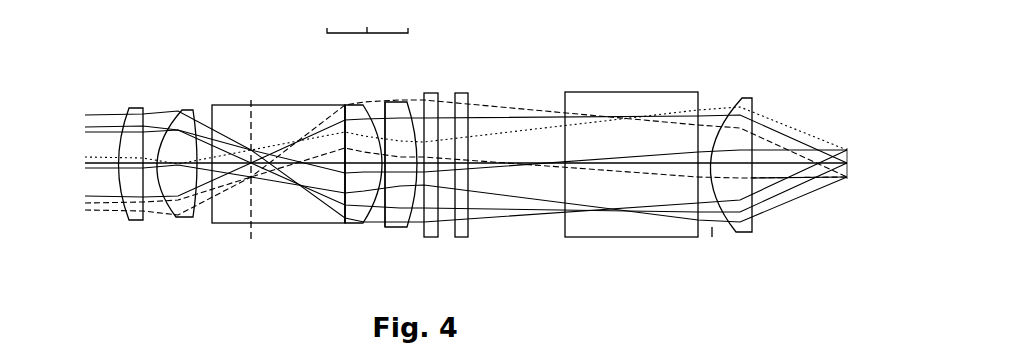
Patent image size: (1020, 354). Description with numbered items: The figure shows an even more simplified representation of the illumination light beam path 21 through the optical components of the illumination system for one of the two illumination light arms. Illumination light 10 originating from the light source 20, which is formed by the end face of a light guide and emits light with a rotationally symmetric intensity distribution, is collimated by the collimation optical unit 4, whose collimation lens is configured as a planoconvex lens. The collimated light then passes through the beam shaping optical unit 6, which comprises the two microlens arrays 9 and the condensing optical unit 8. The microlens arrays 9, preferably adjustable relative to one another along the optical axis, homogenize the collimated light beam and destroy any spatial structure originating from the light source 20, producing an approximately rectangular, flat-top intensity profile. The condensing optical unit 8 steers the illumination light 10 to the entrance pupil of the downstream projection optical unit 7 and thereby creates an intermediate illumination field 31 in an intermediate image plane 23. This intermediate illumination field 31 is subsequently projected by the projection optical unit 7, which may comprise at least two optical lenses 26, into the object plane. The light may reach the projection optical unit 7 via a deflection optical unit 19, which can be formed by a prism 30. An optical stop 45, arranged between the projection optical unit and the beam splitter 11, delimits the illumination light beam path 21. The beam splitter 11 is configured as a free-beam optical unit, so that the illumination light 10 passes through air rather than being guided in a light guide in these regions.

The collimation optical unit 4 is at (740, 115).
The beam shaping optical unit 6 is at (407, 164).
The projection optical unit 7 is at (433, 151).
The condensing optical unit 8 is at (367, 113).
The microlens array 9 is at (432, 97).
The illumination light 10 is at (782, 180).
The beam splitter 11 is at (628, 108).
The deflection optical unit 19 is at (252, 128).
The light source 20 is at (847, 148).
The illumination light beam path 21 is at (542, 112).
The intermediate image plane 23 is at (254, 100).
The optical lens 26 is at (131, 110).
The prism 30 is at (227, 108).
The intermediate illumination field 31 is at (256, 189).
The optical stop 45 is at (712, 103).